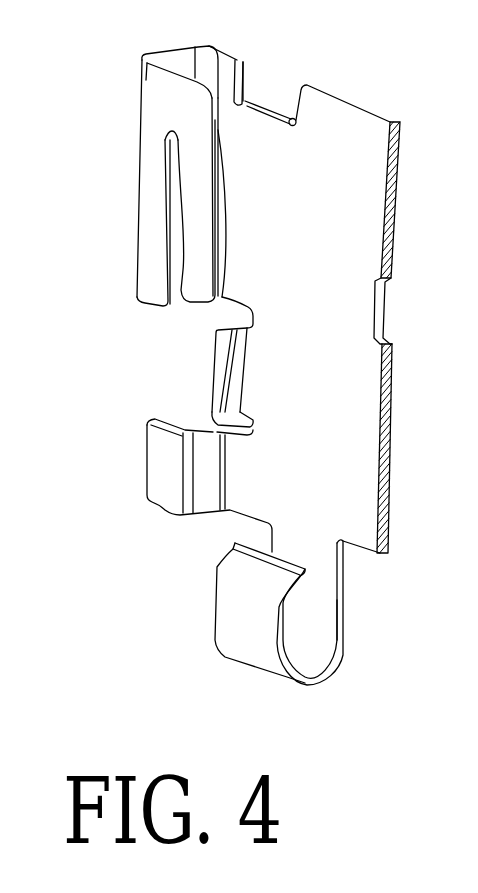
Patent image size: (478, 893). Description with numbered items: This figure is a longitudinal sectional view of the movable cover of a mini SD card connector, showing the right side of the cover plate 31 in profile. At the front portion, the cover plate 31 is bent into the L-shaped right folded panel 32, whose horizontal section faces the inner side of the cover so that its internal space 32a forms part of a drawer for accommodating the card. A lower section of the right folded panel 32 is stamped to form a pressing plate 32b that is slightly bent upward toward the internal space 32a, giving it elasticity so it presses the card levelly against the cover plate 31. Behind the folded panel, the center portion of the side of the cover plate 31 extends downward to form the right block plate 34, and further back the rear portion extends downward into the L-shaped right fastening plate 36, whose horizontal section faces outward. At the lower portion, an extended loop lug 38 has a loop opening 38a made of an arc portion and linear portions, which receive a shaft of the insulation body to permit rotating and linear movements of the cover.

The cover plate 31 is at (390, 168).
The right folded panel 32 is at (146, 203).
The internal space 32a is at (215, 71).
The pressing plate 32b is at (220, 223).
The right block plate 34 is at (213, 377).
The right fastening plate 36 is at (158, 473).
The loop lug 38 is at (227, 613).
The loop opening 38a is at (307, 637).